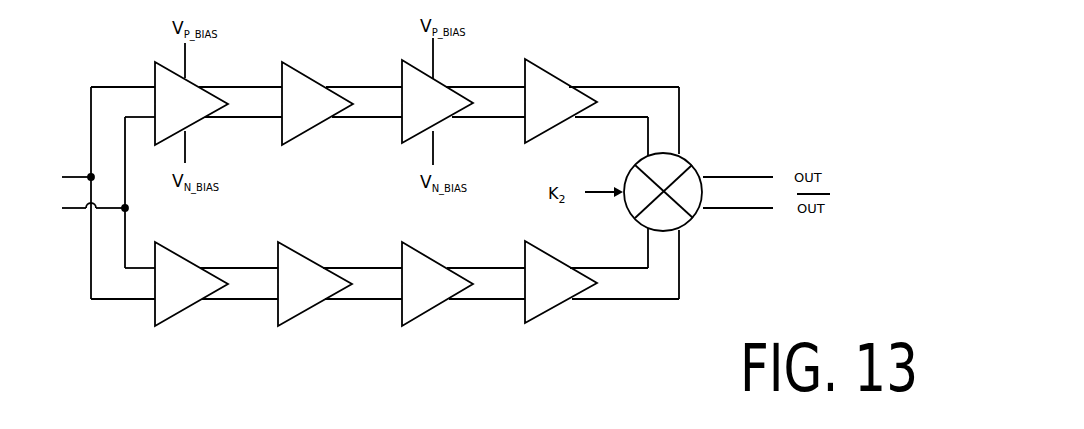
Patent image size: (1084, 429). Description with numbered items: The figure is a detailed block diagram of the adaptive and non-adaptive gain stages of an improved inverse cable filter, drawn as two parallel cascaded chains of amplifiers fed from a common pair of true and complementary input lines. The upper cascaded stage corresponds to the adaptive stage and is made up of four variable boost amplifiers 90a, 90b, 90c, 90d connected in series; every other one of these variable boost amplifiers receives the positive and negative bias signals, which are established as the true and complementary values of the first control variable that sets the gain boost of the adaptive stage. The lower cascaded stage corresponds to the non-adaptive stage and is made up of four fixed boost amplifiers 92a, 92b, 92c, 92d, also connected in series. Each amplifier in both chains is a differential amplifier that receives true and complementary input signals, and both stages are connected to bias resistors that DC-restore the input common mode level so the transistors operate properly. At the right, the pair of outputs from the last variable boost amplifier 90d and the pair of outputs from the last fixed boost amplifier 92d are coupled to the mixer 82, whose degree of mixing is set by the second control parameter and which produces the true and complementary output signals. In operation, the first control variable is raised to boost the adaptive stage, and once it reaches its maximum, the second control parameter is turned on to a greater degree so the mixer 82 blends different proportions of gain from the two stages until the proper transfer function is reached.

The variable boost amplifier 90a is at (199, 118).
The variable boost amplifier 90b is at (318, 122).
The variable boost amplifier 90c is at (447, 120).
The variable boost amplifier 90d is at (562, 122).
The fixed boost amplifier 92a is at (195, 303).
The fixed boost amplifier 92b is at (318, 303).
The fixed boost amplifier 92c is at (440, 303).
The fixed boost amplifier 92d is at (565, 305).
The mixer 82 is at (690, 162).